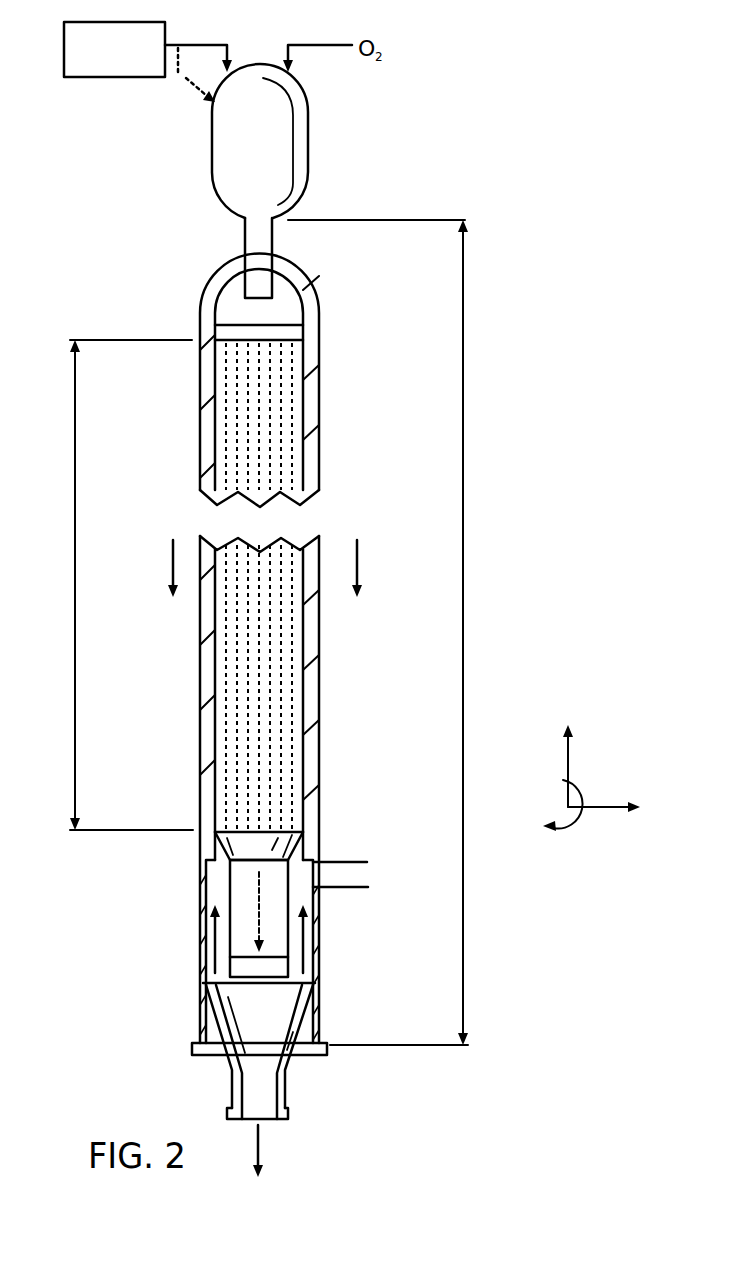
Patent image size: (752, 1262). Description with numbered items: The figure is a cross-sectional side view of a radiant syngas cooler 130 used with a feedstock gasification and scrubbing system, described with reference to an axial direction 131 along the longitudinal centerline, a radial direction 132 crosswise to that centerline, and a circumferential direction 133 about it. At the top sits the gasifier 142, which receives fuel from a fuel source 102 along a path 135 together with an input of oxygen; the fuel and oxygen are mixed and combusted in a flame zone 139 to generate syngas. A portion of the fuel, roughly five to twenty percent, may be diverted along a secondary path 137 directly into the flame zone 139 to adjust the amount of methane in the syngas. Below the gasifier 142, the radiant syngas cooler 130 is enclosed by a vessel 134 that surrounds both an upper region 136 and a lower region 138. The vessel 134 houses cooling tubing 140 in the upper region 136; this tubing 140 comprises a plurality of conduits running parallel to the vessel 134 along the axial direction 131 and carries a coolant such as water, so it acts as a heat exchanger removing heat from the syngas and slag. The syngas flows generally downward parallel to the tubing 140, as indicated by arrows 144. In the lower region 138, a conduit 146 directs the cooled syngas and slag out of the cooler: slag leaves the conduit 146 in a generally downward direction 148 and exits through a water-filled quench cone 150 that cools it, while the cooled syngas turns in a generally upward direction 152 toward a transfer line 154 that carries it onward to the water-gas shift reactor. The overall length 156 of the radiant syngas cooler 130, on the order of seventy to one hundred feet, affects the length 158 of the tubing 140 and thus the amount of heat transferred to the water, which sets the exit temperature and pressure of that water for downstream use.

The fuel source 102 is at (127, 20).
The path 135 is at (200, 46).
The secondary path 137 is at (185, 78).
The gasifier 142 is at (306, 92).
The flame zone 139 is at (240, 97).
The radiant syngas cooler 130 is at (258, 649).
The vessel 134 is at (316, 382).
The upper region 136 is at (328, 452).
The cooling tubing 140 is at (230, 470).
The arrows 144 is at (173, 558).
The lower region 138 is at (194, 860).
The conduit 146 is at (228, 892).
The upward direction 152 is at (213, 928).
The transfer line 154 is at (373, 845).
The quench cone 150 is at (288, 1077).
The downward direction 148 is at (258, 1150).
The length 156 is at (463, 562).
The length 158 is at (75, 575).
The axial direction 131 is at (568, 752).
The radial direction 132 is at (620, 800).
The circumferential direction 133 is at (573, 833).